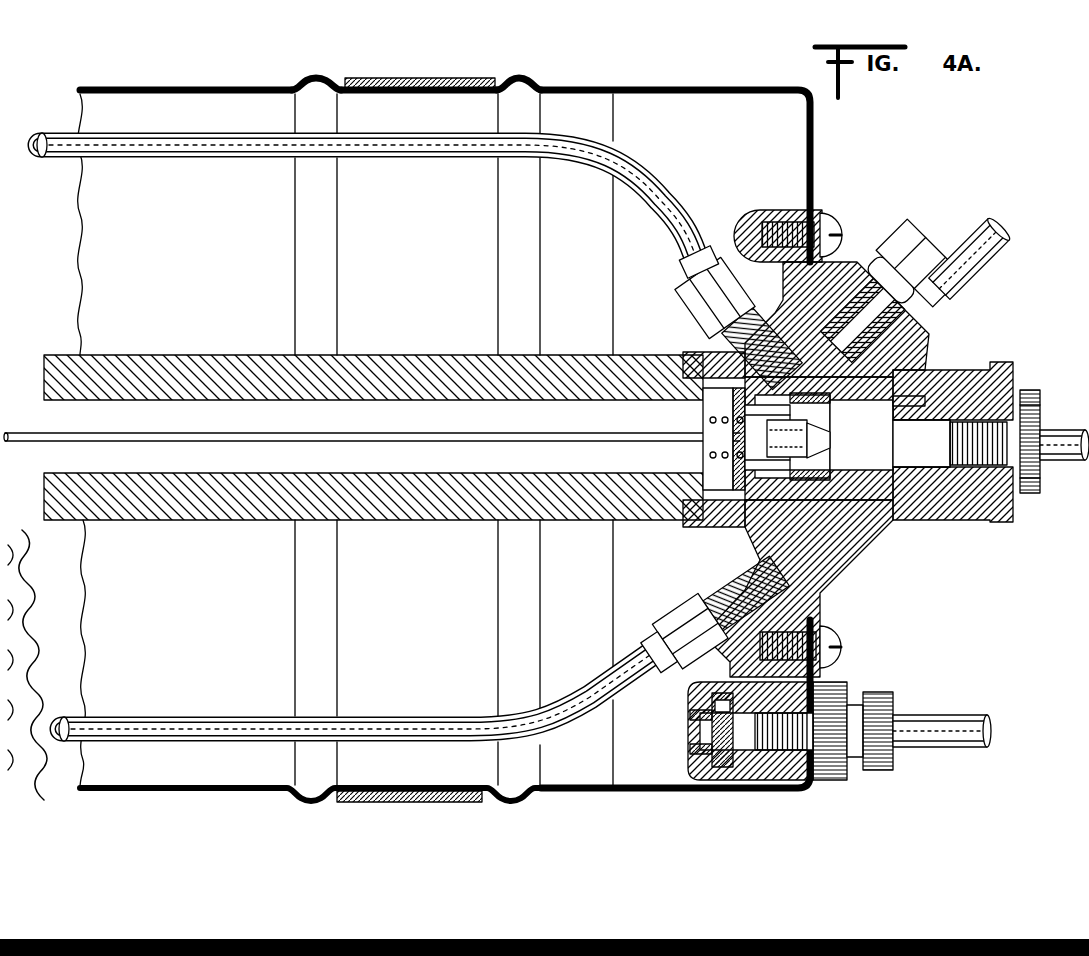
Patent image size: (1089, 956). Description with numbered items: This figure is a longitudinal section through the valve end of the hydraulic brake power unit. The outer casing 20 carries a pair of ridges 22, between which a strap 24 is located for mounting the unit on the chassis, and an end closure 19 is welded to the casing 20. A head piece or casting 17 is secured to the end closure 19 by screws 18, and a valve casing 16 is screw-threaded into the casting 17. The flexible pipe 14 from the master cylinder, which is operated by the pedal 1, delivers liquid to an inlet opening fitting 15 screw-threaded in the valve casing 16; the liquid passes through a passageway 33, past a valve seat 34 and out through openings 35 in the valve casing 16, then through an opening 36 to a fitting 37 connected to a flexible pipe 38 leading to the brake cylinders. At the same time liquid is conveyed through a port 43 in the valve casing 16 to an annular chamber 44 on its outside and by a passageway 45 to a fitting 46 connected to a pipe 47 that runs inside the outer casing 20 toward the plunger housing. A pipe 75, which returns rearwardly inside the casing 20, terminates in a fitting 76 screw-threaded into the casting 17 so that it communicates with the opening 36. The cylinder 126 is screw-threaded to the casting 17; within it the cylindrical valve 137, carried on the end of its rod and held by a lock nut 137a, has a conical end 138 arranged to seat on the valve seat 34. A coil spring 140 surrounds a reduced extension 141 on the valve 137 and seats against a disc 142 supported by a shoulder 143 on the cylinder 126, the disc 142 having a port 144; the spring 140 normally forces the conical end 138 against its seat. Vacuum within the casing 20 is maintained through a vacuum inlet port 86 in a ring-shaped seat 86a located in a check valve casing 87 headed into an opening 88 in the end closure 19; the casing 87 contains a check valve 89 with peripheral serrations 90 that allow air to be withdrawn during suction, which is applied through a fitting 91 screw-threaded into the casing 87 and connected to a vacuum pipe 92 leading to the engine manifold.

The pedal 1 is at (8, 432).
The flexible pipe 14 is at (1062, 460).
The inlet opening fitting 15 is at (1032, 392).
The valve casing 16 is at (960, 372).
The head piece or casting 17 is at (950, 522).
The screws 18 is at (836, 216).
The end closure 19 is at (690, 90).
The outer casing 20 is at (122, 88).
The ridges 22 is at (308, 76).
The strap 24 is at (405, 801).
The passageway 33 is at (884, 345).
The valve seat 34 is at (860, 345).
The openings 35 is at (812, 400).
The opening 36 is at (818, 346).
The fitting 37 is at (872, 300).
The flexible pipe 38 is at (972, 225).
The port 43 is at (950, 443).
The annular chamber 44 is at (910, 398).
The passageway 45 is at (878, 512).
The fitting 46 is at (672, 612).
The pipe 47 is at (146, 722).
The pipe 75 is at (65, 150).
The fitting 76 is at (690, 302).
The vacuum inlet port 86 is at (698, 736).
The ring-shaped seat 86a is at (698, 712).
The check valve casing 87 is at (776, 770).
The opening 88 is at (808, 782).
The check valve 89 is at (722, 770).
The peripheral serrations 90 is at (722, 700).
The fitting 91 is at (865, 770).
The vacuum pipe 92 is at (952, 716).
The cylinder 126 is at (396, 356).
The cylindrical valve 137 is at (780, 495).
The lock nut 137a is at (710, 423).
The conical end 138 is at (805, 458).
The coil spring 140 is at (780, 458).
The reduced extension 141 is at (757, 410).
The disc 142 is at (705, 470).
The shoulder 143 is at (690, 522).
The port 144 is at (705, 402).